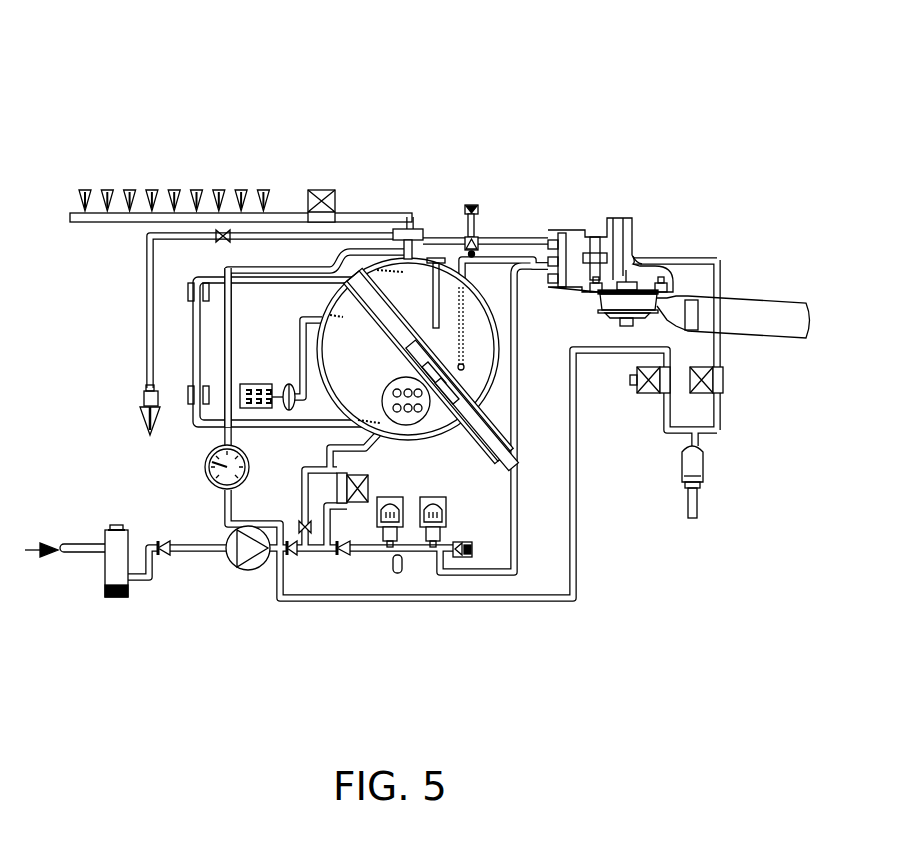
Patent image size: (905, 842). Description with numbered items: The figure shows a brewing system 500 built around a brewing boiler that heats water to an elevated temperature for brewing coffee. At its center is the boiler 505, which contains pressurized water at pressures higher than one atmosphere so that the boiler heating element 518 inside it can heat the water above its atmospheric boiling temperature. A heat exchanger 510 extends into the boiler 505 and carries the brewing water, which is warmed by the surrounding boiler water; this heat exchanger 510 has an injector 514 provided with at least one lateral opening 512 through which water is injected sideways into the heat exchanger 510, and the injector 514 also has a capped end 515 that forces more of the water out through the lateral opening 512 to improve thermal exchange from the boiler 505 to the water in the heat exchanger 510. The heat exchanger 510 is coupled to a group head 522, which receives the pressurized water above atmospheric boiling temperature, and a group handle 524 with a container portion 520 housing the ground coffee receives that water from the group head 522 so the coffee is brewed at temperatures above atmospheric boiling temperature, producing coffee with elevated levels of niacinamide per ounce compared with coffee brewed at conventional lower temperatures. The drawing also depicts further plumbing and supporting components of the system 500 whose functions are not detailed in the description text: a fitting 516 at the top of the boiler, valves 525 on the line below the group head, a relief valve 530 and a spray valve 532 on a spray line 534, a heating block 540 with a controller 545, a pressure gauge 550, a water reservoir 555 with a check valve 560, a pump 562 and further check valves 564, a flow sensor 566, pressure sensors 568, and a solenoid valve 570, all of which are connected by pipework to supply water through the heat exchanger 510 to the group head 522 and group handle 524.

The system 500 is at (650, 105).
The boiler 505 is at (337, 272).
The heat exchanger 510 is at (353, 288).
The lateral opening 512 is at (500, 405).
The injector 514 is at (505, 460).
The capped end 515 is at (405, 340).
The fitting 516 is at (432, 252).
The boiler heating element 518 is at (338, 336).
The container portion 520 is at (667, 270).
The group head 522 is at (641, 258).
The group handle 524 is at (768, 295).
The steam valves 525 is at (723, 375).
The relief valve 530 is at (478, 212).
The spray valve 532 is at (318, 188).
The spray line 534 is at (148, 278).
The heating block 540 is at (193, 338).
The controller 545 is at (247, 385).
The pressure gauge 550 is at (200, 490).
The water reservoir 555 is at (113, 528).
The check valve 560 is at (173, 557).
The pump 562 is at (250, 570).
The check valve 564 is at (285, 556).
The flow sensor 566 is at (467, 558).
The pressure sensors 568 is at (445, 513).
The solenoid valve 570 is at (372, 476).